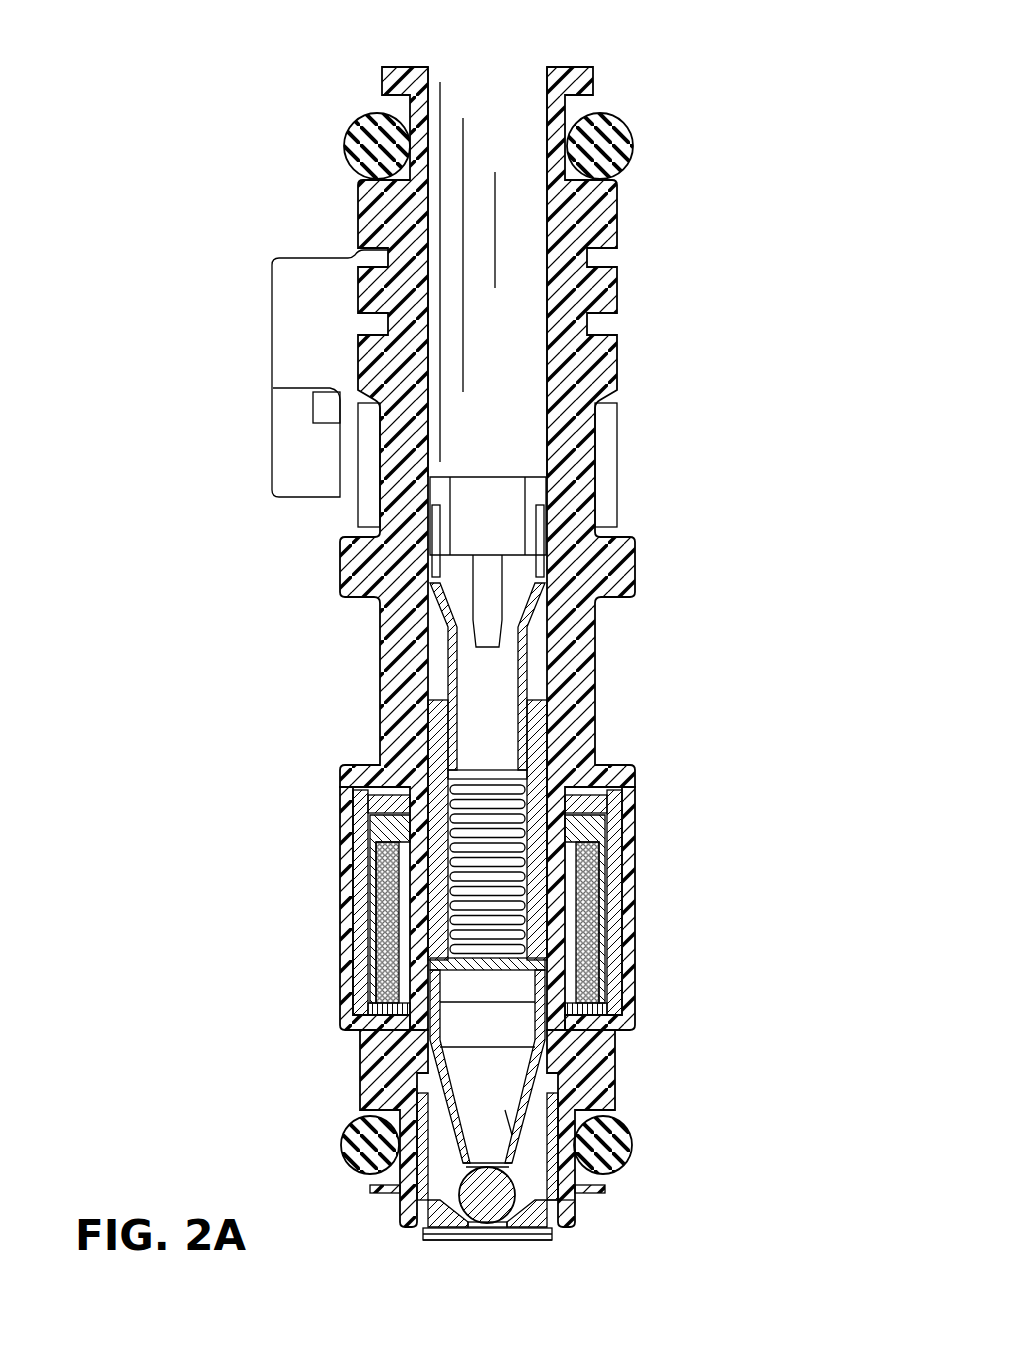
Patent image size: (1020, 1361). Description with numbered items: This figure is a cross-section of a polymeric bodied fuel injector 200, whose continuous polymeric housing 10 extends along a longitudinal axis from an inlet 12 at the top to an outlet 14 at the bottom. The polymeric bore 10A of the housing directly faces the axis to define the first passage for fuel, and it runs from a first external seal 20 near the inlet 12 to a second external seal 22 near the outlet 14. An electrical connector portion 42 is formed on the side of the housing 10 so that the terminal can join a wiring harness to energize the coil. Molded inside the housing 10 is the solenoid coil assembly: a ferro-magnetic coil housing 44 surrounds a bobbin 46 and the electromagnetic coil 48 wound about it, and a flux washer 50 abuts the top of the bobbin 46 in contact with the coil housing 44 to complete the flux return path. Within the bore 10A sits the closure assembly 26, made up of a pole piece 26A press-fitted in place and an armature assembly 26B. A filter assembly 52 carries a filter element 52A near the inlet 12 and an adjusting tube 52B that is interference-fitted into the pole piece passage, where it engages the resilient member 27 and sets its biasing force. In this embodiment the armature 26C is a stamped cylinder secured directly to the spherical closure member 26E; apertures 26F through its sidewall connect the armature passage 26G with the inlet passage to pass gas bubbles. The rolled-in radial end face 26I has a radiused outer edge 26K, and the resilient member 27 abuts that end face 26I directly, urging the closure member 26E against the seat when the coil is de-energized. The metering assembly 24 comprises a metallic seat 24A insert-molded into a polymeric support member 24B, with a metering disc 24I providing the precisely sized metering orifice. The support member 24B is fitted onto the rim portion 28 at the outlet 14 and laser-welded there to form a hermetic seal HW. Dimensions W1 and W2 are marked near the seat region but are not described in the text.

The polymeric housing 10 is at (600, 238).
The polymeric bore 10A is at (530, 332).
The inlet 12 is at (512, 60).
The outlet 14 is at (457, 1251).
The first external seal 20 is at (612, 132).
The second external seal 22 is at (358, 1123).
The metering assembly 24 is at (412, 1235).
The seat 24A is at (507, 1247).
The polymeric support member 24B is at (418, 1222).
The metering disc 24I is at (457, 1243).
The closure assembly 26 is at (748, 853).
The pole piece 26A is at (530, 799).
The armature assembly 26B is at (543, 977).
The armature 26C is at (533, 1003).
The closure member 26E is at (345, 1137).
The aperture 26F is at (515, 1120).
The armature passage 26G is at (450, 1047).
The radial end face 26I is at (445, 1000).
The outer edge 26K is at (450, 962).
The resilient member 27 is at (460, 848).
The rim portion 28 is at (553, 1218).
The electrical connector portion 42 is at (292, 332).
The coil housing 44 is at (615, 825).
The bobbin 46 is at (372, 820).
The electromagnetic coil 48 is at (387, 923).
The flux washer 50 is at (635, 780).
The filter assembly 52 is at (525, 657).
The filter element 52A is at (512, 575).
The adjusting tube 52B is at (517, 775).
The fuel injector 200 is at (785, 164).
The hermetic seal HW is at (570, 1205).
The first width dimension W1 is at (509, 1170).
The second width dimension W2 is at (527, 1237).